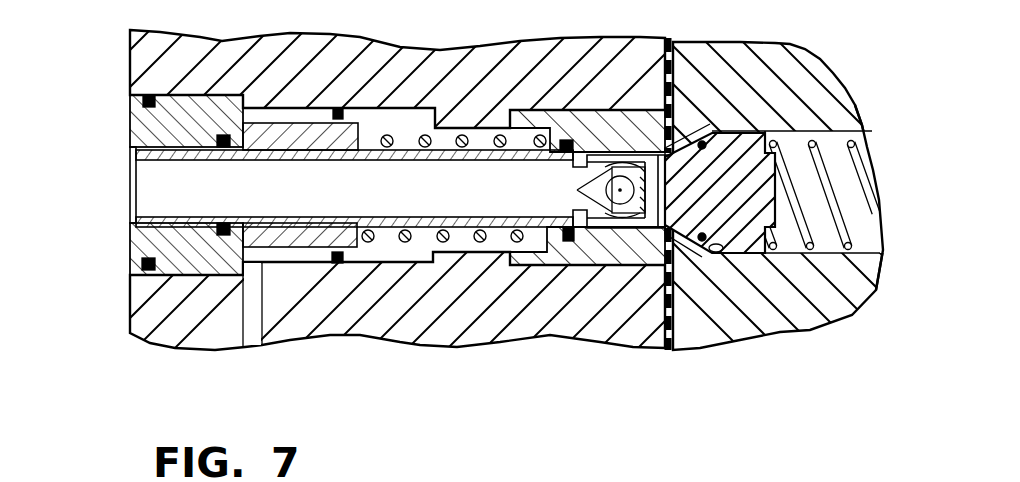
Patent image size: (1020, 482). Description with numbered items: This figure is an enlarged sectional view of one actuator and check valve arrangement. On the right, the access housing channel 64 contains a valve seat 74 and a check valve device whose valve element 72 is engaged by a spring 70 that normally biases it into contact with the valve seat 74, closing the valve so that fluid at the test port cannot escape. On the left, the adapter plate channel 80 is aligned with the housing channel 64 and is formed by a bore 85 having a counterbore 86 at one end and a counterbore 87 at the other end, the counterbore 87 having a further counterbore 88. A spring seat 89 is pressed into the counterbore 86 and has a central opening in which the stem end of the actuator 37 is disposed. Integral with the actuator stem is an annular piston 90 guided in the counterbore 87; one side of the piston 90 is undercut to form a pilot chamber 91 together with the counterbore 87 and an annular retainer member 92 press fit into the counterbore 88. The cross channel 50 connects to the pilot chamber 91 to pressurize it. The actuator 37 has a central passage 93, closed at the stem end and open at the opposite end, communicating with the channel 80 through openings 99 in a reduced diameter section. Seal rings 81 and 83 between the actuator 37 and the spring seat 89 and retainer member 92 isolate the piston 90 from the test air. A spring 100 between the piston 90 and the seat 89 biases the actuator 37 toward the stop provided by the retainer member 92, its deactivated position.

The annular piston 90 is at (258, 100).
The counterbore 87 is at (375, 118).
The spring 100 is at (425, 134).
The bore 85 is at (472, 133).
The counterbore 86 is at (620, 122).
The channel 80 is at (673, 145).
The annular retainer member 92 is at (135, 124).
The seal ring 83 is at (135, 243).
The openings 99 is at (577, 190).
The counterbore 88 is at (203, 262).
The cross-channel 50 is at (247, 338).
The pilot chamber 91 is at (280, 257).
The actuator 37 is at (333, 240).
The central passage 93 is at (441, 222).
The seal ring 81 is at (566, 236).
The spring seat 89 is at (605, 242).
The valve seat 74 is at (720, 262).
The valve element 72 is at (742, 217).
The spring 70 is at (803, 233).
The housing channel 64 is at (830, 240).